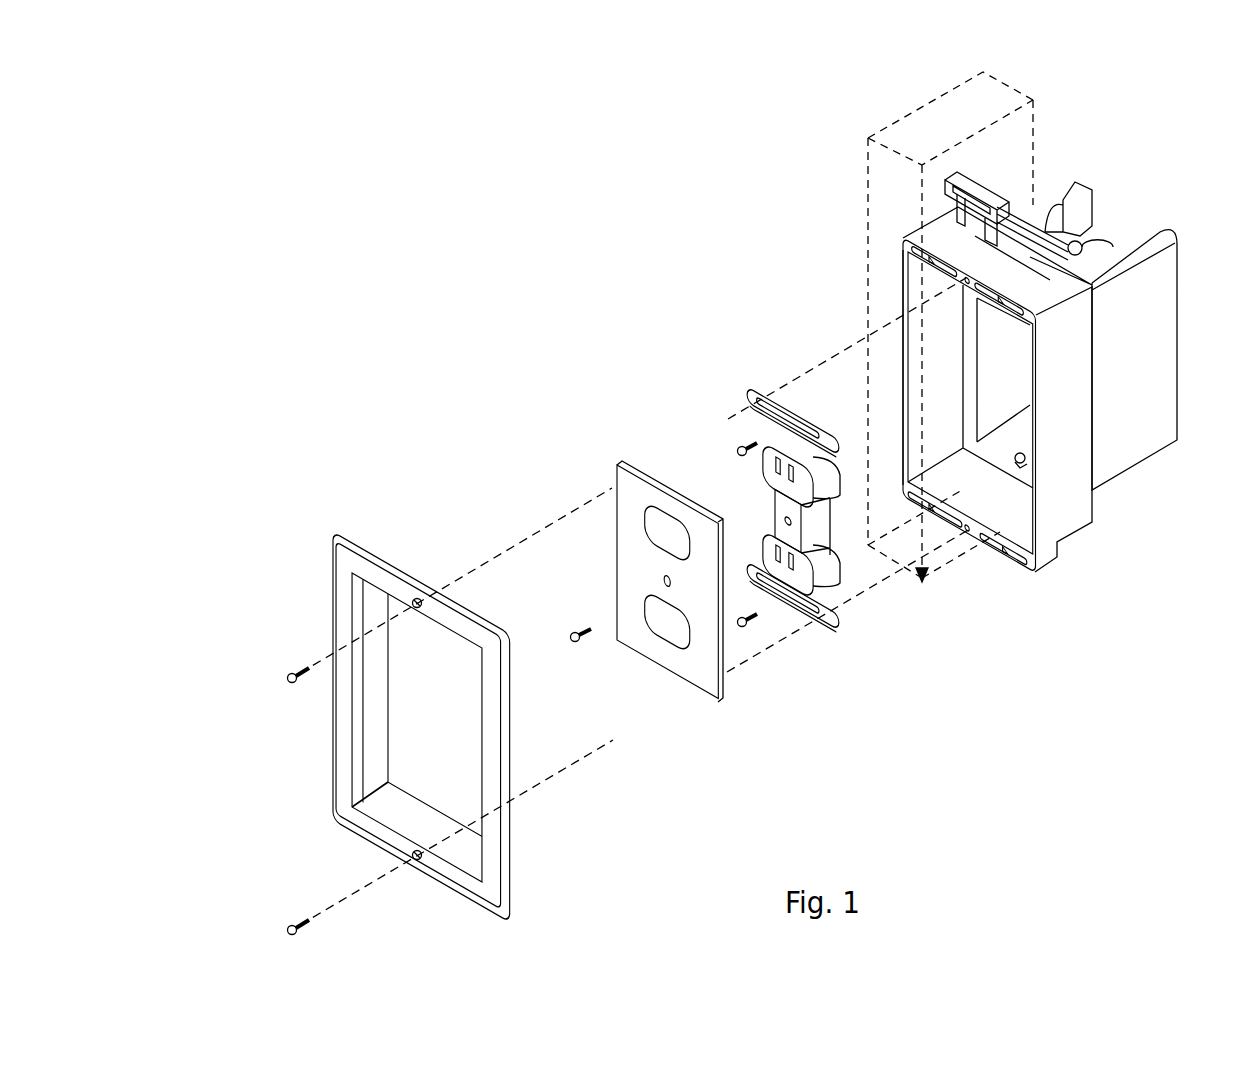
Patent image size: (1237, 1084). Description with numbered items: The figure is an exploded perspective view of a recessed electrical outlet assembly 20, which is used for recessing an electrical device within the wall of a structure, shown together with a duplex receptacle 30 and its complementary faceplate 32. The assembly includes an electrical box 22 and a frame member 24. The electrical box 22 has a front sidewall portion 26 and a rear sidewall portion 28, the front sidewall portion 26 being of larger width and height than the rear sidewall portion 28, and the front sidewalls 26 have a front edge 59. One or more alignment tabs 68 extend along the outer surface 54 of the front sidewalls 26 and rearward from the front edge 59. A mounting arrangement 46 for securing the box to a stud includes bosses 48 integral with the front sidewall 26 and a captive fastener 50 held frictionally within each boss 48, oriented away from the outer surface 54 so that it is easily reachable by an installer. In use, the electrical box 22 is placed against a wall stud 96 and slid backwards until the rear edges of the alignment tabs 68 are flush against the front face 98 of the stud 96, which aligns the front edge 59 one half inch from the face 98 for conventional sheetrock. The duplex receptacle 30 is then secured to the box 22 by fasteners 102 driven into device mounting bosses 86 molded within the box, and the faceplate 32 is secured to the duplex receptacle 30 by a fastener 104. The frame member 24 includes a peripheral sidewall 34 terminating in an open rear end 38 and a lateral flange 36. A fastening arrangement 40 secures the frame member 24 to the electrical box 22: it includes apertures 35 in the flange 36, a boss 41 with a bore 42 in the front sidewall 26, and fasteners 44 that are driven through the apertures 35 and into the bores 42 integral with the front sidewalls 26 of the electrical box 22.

The recessed electrical outlet assembly 20 is at (425, 212).
The electrical box 22 is at (1005, 377).
The frame member 24 is at (424, 700).
The front sidewall portion 26 is at (982, 265).
The rear sidewall portion 28 is at (1148, 369).
The duplex receptacle 30 is at (769, 436).
The faceplate 32 is at (570, 484).
The peripheral sidewall 34 is at (375, 726).
The apertures 35 is at (411, 603).
The lateral flange 36 is at (495, 832).
The open rear end 38 is at (448, 722).
The fastening arrangement 40 is at (231, 780).
The boss 41 is at (962, 283).
The bore 42 is at (965, 277).
The fastener 44 is at (292, 673).
The mounting arrangement 46 is at (1096, 268).
The bosses 48 is at (980, 182).
The captive fastener 50 is at (1042, 225).
The outer surface 54 is at (947, 232).
The front edge 59 is at (900, 346).
The alignment tabs 68 is at (900, 297).
The device mounting bosses 86 is at (1016, 465).
The wall stud 96 is at (932, 323).
The front face 98 is at (907, 196).
The fasteners 102 is at (738, 449).
The fastener 104 is at (578, 642).